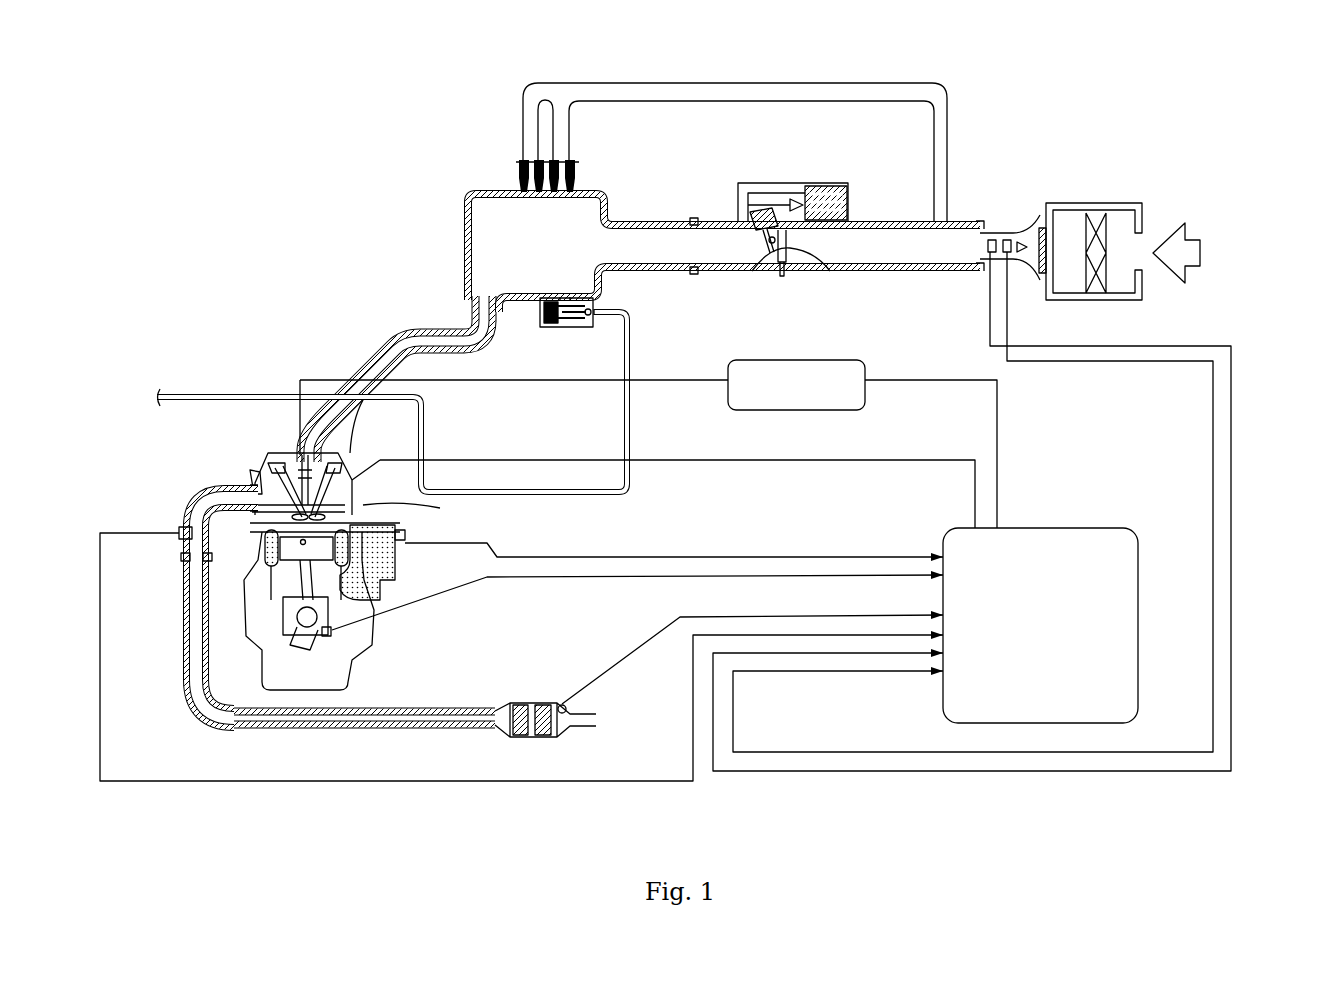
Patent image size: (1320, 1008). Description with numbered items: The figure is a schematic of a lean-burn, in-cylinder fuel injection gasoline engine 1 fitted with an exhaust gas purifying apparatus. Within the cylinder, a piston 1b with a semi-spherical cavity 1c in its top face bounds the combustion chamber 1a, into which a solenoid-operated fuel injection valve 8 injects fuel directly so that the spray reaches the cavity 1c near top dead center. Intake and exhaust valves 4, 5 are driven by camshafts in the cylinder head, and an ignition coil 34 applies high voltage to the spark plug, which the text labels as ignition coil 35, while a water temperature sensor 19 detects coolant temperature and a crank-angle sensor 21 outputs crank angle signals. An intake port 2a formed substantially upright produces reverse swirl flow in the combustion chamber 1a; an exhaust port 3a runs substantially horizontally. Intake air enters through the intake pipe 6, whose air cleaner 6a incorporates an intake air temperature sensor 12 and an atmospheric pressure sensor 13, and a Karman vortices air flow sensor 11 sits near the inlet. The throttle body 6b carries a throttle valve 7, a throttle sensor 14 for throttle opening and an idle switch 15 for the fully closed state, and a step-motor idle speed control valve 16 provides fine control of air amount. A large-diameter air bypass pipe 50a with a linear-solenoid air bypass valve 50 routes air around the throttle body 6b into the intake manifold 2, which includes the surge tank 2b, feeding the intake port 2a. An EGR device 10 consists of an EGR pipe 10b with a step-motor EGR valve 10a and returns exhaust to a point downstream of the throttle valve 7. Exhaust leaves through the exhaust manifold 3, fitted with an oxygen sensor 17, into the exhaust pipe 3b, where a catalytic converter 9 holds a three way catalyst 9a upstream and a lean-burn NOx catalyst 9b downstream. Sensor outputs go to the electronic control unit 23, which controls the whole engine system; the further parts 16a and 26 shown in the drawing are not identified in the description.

The engine 1 is at (222, 612).
The combustion chamber 1a is at (262, 538).
The piston 1b is at (262, 653).
The cavity 1c is at (350, 472).
The intake manifold 2 is at (372, 348).
The intake port 2a is at (296, 442).
The surge tank 2b is at (520, 234).
The exhaust manifold 3 is at (213, 495).
The exhaust port 3a is at (245, 488).
The exhaust pipe 3b is at (300, 729).
The intake valve 4 is at (290, 560).
The exhaust valve 5 is at (262, 480).
The intake pipe 6 is at (898, 221).
The air cleaner 6a is at (1113, 203).
The throttle body 6b is at (781, 290).
The throttle valve 7 is at (760, 262).
The fuel injection valve 8 is at (437, 508).
The catalytic converter 9 is at (588, 734).
The three way catalyst 9a is at (520, 738).
The lean-burn NOx catalyst 9b is at (540, 738).
The EGR device 10 is at (645, 432).
The EGR valve 10a is at (576, 327).
The EGR pipe 10b is at (635, 345).
The Karman vortices air flow sensor 11 is at (973, 454).
The intake air temperature sensor 12 is at (992, 240).
The atmospheric pressure sensor 13 is at (1008, 240).
The throttle sensor 14 is at (824, 272).
The idle switch 15 is at (800, 262).
The idle speed control valve 16 is at (790, 183).
The actuator housing 16a is at (762, 183).
The O2 sensor 17 is at (178, 530).
The water temperature sensor 19 is at (405, 540).
The crank-angle sensor 21 is at (333, 640).
The electronic control unit 23 is at (1075, 528).
The catalyst temperature sensor 26 is at (560, 704).
The ignition coil 34 is at (868, 362).
The spark plug 35 is at (258, 470).
The air bypass valve 50 is at (588, 156).
The air bypass pipe 50a is at (838, 100).